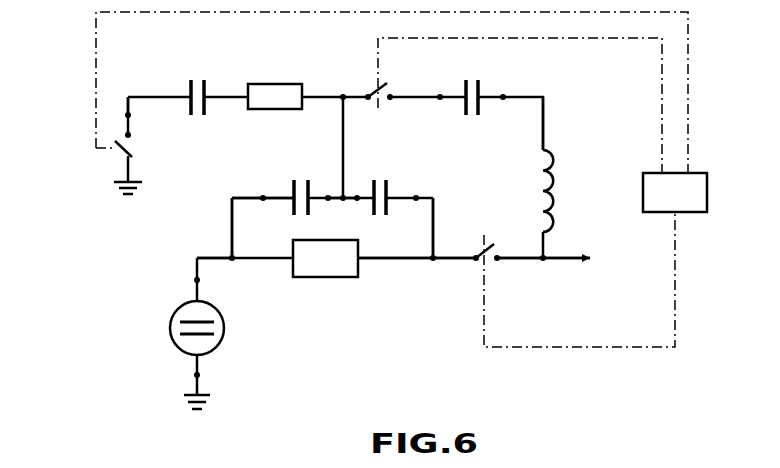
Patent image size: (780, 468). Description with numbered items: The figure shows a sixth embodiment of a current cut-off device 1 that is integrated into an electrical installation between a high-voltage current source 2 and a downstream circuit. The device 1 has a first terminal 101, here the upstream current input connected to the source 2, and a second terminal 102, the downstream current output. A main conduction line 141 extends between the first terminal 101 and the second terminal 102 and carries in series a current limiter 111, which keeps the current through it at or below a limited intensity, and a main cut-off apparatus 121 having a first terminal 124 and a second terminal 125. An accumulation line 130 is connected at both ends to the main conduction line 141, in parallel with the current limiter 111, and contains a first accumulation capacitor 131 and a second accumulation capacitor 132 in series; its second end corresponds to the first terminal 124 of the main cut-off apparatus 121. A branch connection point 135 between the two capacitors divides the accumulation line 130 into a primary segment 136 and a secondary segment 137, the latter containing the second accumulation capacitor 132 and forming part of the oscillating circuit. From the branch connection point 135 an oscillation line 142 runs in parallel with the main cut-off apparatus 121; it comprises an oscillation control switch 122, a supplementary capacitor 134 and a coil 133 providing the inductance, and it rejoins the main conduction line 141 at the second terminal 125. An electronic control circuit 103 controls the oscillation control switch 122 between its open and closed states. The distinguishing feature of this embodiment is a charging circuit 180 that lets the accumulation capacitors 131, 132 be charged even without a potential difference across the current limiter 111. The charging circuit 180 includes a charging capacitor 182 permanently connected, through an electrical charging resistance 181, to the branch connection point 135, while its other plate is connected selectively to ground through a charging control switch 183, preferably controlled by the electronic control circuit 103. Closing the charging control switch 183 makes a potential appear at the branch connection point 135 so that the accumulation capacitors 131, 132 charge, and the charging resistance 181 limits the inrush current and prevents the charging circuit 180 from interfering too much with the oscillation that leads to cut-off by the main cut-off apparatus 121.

The cut-off device 1 is at (700, 92).
The high-voltage current source 2 is at (170, 325).
The first terminal 101 is at (216, 255).
The second terminal 102 is at (594, 258).
The electronic control circuit 103 is at (692, 209).
The current limiter 111 is at (342, 273).
The main cut-off apparatus 121 is at (483, 249).
The oscillation control switch 122 is at (380, 85).
The first terminal of the main cut-off apparatus 124 is at (435, 262).
The second terminal of the main cut-off apparatus 125 is at (545, 262).
The accumulation line 130 is at (230, 197).
The first accumulation capacitor 131 is at (305, 186).
The second accumulation capacitor 132 is at (389, 190).
The coil 133 is at (554, 182).
The supplementary capacitor 134 is at (481, 90).
The branch connection point 135 is at (341, 218).
The primary segment 136 is at (252, 196).
The secondary segment 137 is at (436, 212).
The main conduction line 141 is at (388, 262).
The oscillation line 142 is at (547, 131).
The charging circuit 180 is at (126, 100).
The electrical charging resistance 181 is at (274, 88).
The charging capacitor 182 is at (188, 86).
The charging control switch 183 is at (121, 152).